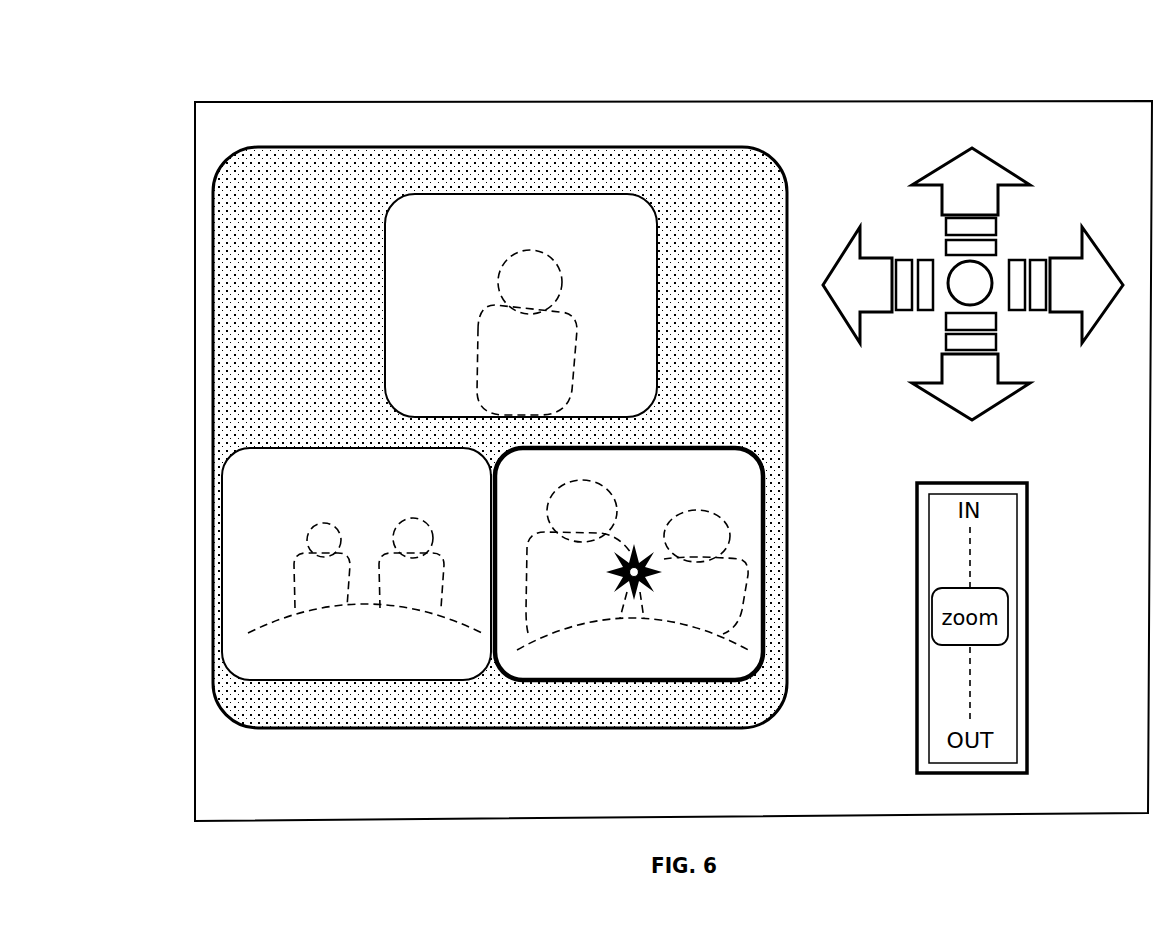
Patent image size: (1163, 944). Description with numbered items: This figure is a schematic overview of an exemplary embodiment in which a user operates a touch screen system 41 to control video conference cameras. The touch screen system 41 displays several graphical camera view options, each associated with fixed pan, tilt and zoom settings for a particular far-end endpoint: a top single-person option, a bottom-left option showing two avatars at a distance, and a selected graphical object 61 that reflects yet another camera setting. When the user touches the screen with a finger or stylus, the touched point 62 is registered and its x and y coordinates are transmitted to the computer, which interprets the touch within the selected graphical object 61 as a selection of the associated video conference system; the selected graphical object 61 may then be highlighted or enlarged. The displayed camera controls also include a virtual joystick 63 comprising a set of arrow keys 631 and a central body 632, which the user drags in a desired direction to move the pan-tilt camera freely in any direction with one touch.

The touch screen system 41 is at (364, 103).
The selected graphical object 61 is at (629, 533).
The touched point 62 is at (636, 557).
The virtual joystick 63 is at (975, 277).
The arrow keys 631 is at (1095, 305).
The central body 632 is at (964, 281).